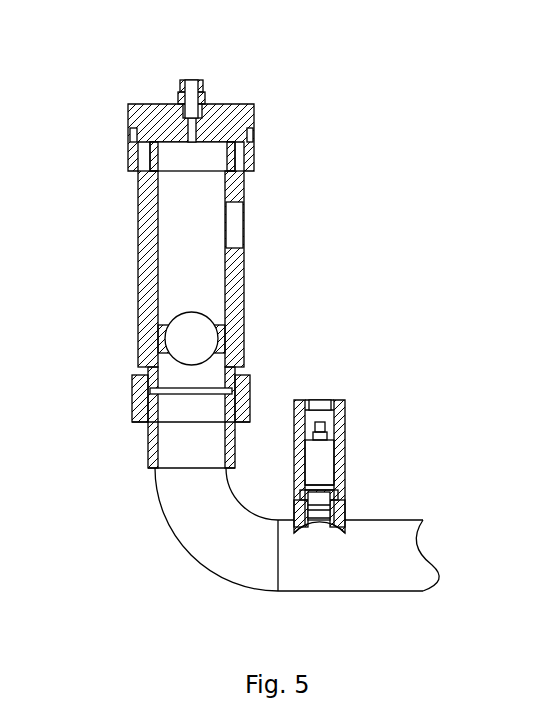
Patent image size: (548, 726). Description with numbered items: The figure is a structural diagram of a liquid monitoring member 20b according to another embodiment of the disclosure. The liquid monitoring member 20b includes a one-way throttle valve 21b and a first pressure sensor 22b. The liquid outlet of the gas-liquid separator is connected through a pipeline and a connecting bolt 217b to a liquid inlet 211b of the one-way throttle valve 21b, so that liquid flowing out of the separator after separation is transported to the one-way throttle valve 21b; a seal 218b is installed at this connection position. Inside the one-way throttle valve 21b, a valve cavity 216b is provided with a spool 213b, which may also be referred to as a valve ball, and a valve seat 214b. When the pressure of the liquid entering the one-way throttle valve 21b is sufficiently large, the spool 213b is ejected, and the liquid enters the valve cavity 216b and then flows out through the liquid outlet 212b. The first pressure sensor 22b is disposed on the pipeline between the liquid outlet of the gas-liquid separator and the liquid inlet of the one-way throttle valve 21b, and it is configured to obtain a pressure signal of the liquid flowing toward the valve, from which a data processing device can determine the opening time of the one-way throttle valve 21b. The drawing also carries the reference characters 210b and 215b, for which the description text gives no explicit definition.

The liquid monitoring member 20b is at (388, 191).
The one-way throttle valve 21b is at (110, 163).
The first pressure sensor 22b is at (322, 467).
The pipe connector 210b is at (172, 440).
The liquid inlet 211b is at (146, 420).
The liquid outlet 212b is at (238, 230).
The spool 213b is at (202, 343).
The valve seat 214b is at (160, 327).
The fitting 215b is at (232, 108).
The valve cavity 216b is at (172, 248).
The connecting bolt 217b is at (251, 398).
The seal 218b is at (243, 345).